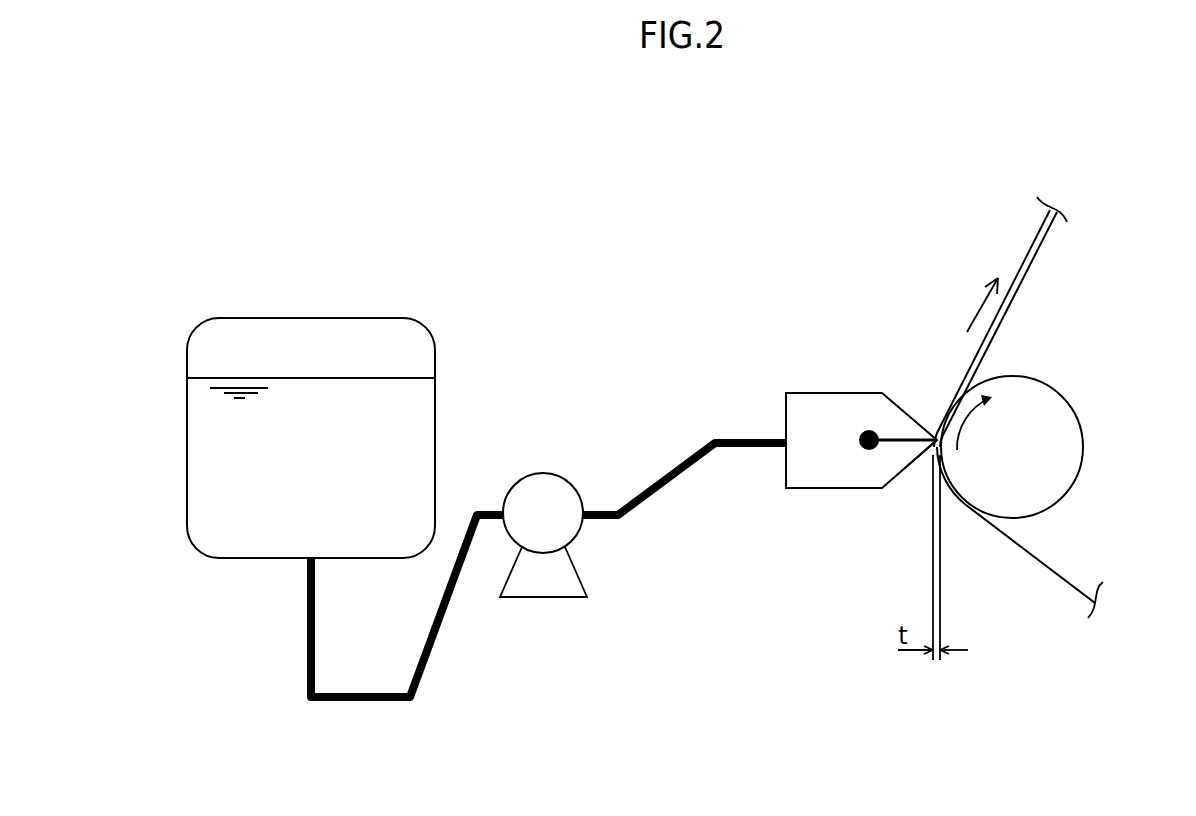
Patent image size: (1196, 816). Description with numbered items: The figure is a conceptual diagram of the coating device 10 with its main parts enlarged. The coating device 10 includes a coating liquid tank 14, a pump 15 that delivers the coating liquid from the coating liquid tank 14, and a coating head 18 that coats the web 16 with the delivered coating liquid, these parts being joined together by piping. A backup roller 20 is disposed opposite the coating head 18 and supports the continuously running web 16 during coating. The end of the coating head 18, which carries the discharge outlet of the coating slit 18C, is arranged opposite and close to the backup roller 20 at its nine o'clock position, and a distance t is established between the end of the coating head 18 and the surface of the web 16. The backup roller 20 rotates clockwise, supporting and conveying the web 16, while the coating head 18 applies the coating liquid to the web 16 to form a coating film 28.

The coating device 10 is at (752, 225).
The coating liquid tank 14 is at (313, 318).
The pump 15 is at (543, 473).
The web 16 is at (1065, 583).
The coating head 18 is at (830, 407).
The coating slit 18C is at (897, 443).
The backup roller 20 is at (1063, 477).
The coating film 28 is at (1013, 268).